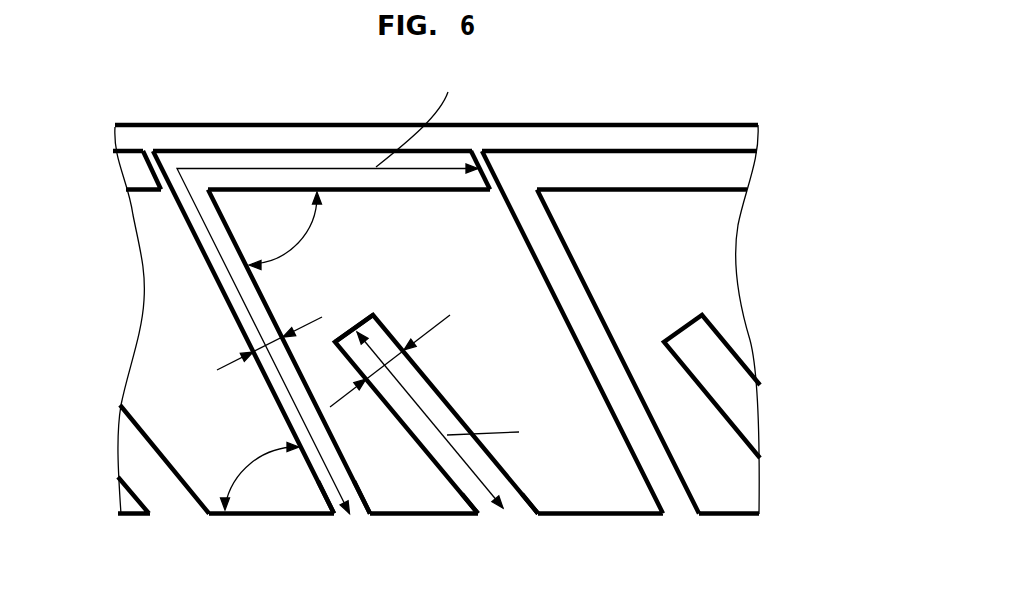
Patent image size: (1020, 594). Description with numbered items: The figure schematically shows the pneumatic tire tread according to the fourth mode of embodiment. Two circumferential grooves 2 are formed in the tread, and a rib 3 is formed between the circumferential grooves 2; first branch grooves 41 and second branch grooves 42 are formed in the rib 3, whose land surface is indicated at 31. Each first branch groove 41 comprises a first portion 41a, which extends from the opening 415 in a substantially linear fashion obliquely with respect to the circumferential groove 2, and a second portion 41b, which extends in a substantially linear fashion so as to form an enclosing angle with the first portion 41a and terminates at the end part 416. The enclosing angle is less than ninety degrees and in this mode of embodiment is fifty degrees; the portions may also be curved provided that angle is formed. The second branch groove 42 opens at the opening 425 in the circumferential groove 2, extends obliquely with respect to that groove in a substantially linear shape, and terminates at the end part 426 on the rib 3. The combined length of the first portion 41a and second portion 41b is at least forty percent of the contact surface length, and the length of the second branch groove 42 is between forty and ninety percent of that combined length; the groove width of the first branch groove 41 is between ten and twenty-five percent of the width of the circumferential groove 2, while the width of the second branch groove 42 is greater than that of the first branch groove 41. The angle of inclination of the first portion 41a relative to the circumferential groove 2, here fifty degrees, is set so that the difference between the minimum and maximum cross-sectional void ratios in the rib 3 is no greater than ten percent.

The circumferential groove 2 is at (185, 110).
The rib 3 is at (177, 280).
The land portion 31 is at (657, 262).
The first branch groove 41 is at (321, 325).
The first portion 41a is at (233, 310).
The second portion 41b is at (258, 162).
The second branch groove 42 is at (445, 431).
The opening 415 is at (350, 518).
The end part 416 is at (478, 172).
The opening 425 is at (502, 518).
The end part 426 is at (346, 336).